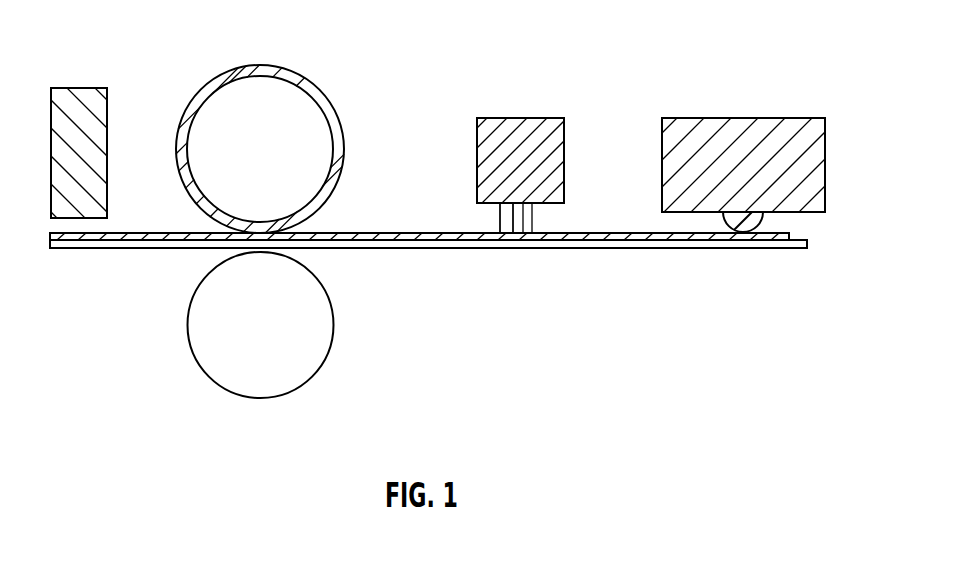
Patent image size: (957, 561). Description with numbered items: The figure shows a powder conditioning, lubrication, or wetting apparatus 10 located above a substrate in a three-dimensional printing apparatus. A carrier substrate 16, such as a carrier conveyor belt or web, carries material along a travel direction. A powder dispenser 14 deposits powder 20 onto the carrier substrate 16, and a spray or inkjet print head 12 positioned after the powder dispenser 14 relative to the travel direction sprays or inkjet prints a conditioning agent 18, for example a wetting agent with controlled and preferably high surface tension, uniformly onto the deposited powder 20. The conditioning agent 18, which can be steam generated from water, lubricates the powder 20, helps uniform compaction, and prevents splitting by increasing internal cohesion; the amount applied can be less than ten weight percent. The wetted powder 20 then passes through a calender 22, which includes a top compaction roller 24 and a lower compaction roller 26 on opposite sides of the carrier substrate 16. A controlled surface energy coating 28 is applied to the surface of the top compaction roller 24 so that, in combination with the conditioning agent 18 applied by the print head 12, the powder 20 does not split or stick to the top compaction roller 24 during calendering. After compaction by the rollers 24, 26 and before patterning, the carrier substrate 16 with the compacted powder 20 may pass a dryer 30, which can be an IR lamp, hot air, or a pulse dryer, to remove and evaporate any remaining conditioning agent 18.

The powder conditioning, lubrication, or wetting apparatus 10 is at (557, 58).
The spray or inkjet print head 12 is at (492, 167).
The powder dispenser 14 is at (808, 157).
The carrier substrate 16 is at (513, 249).
The conditioning agent 18 is at (532, 207).
The powder 20 is at (638, 232).
The calender 22 is at (198, 53).
The top compaction roller 24 is at (303, 127).
The lower compaction roller 26 is at (298, 327).
The controlled surface energy coating 28 is at (302, 76).
The dryer 30 is at (85, 97).